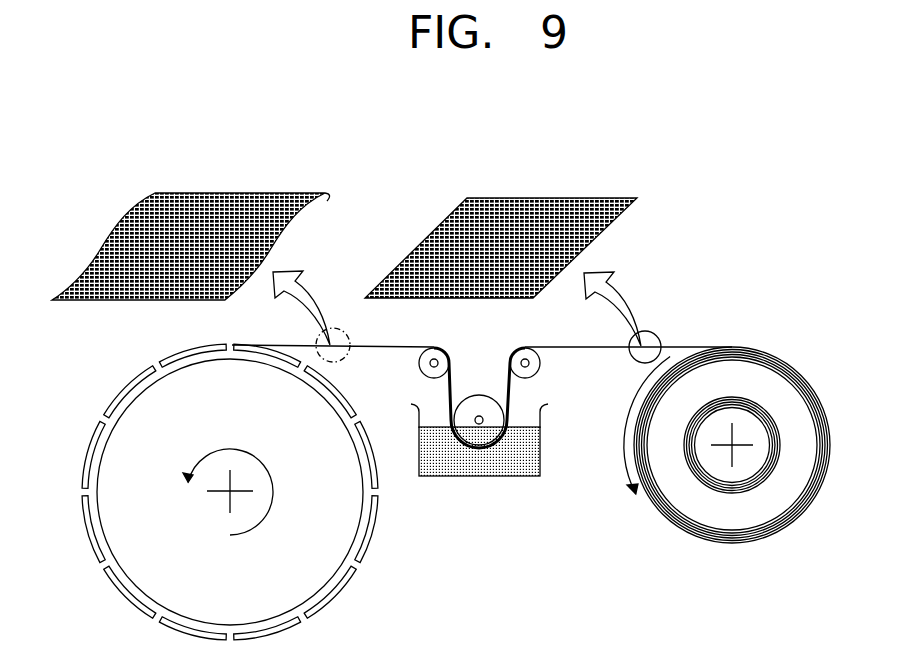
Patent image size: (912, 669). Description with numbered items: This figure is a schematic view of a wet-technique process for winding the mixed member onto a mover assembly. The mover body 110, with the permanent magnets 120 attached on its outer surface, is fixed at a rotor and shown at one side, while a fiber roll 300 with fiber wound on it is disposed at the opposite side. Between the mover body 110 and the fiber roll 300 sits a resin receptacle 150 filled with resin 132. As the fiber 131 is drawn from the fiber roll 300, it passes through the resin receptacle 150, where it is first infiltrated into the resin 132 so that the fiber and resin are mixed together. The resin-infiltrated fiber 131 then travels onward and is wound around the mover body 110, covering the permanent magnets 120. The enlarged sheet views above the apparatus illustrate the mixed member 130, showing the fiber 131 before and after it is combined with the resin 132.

The mover body 110 is at (343, 577).
The permanent magnets 120 is at (372, 532).
The sheet assembly 130 is at (392, 326).
The fiber 131 is at (267, 196).
The resin 132 is at (305, 133).
The resin receptacle 150 is at (540, 452).
The fiber roll 300 is at (658, 517).